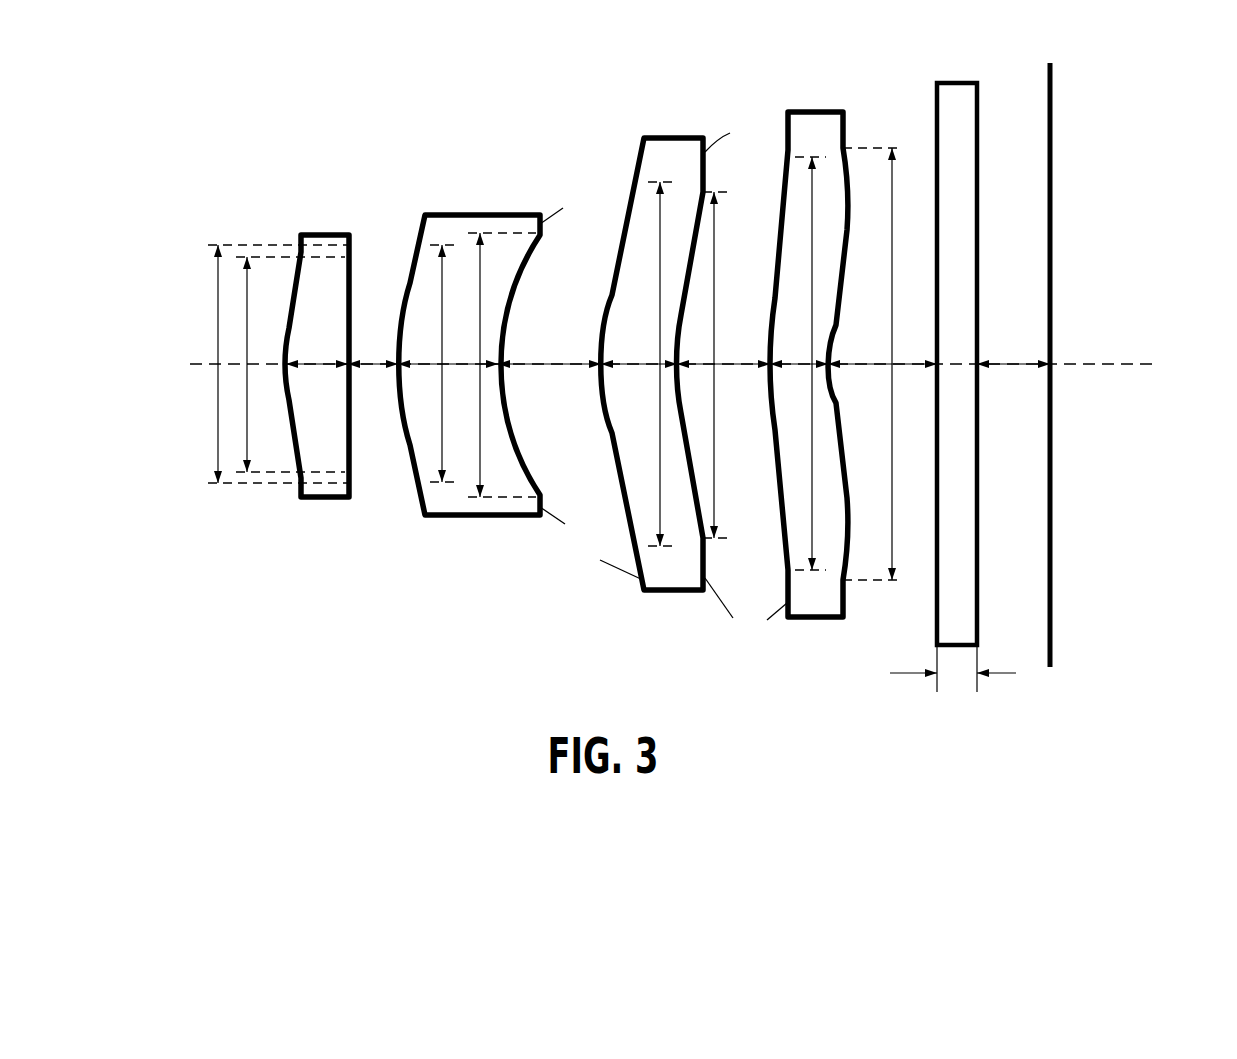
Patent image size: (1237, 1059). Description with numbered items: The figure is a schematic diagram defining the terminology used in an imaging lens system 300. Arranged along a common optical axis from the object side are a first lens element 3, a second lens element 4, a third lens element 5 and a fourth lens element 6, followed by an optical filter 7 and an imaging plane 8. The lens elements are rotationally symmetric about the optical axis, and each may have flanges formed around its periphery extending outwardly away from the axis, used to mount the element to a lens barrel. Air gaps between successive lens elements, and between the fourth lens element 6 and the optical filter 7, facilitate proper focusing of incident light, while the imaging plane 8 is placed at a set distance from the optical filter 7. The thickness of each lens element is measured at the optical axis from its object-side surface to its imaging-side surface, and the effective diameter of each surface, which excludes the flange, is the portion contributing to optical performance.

The lens system 300 is at (575, 39).
The first lens element 3 is at (322, 253).
The second lens element 4 is at (455, 236).
The third lens element 5 is at (655, 160).
The fourth lens element 6 is at (817, 132).
The optical filter 7 is at (947, 103).
The imaging plane 8 is at (1048, 92).